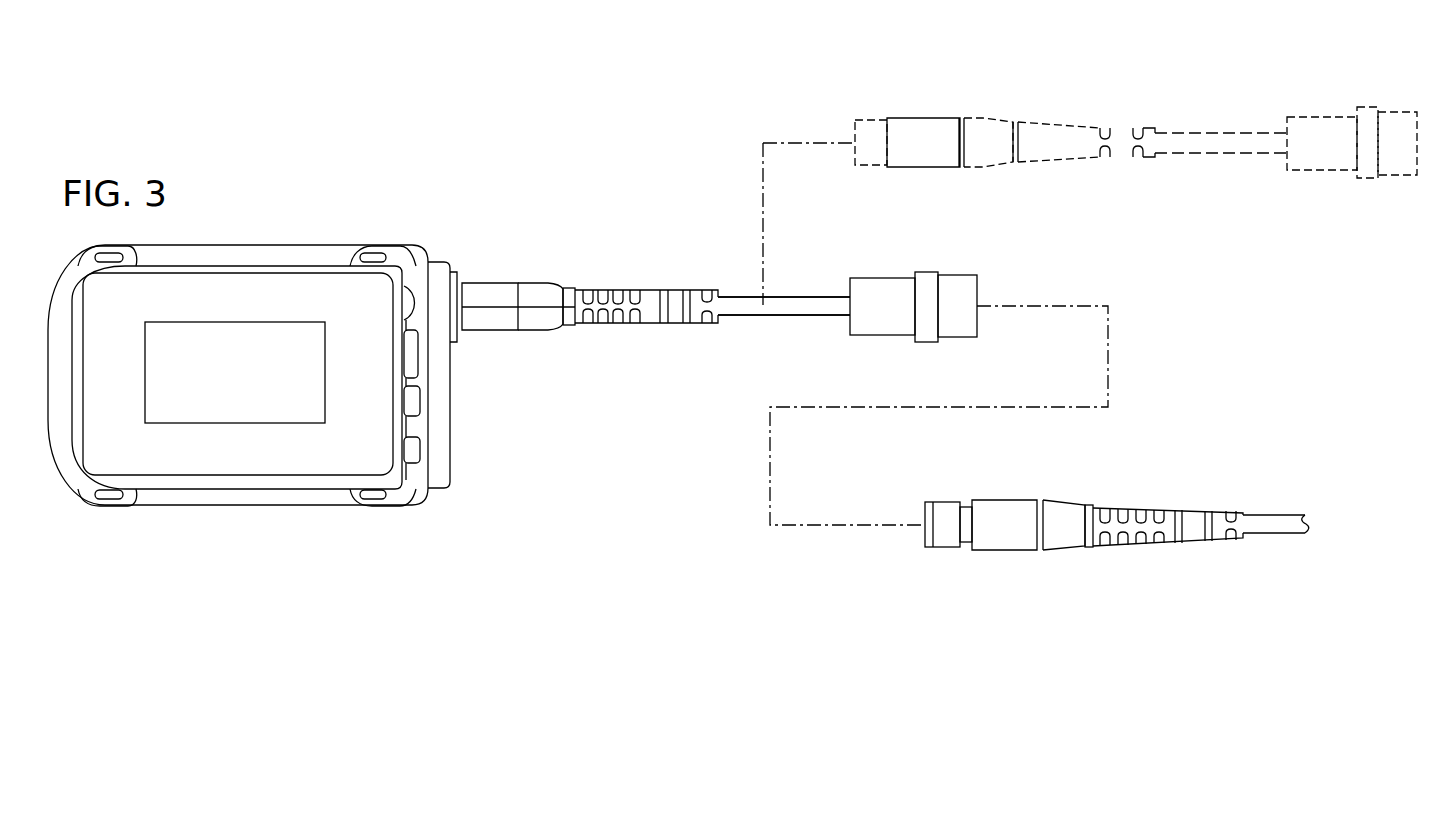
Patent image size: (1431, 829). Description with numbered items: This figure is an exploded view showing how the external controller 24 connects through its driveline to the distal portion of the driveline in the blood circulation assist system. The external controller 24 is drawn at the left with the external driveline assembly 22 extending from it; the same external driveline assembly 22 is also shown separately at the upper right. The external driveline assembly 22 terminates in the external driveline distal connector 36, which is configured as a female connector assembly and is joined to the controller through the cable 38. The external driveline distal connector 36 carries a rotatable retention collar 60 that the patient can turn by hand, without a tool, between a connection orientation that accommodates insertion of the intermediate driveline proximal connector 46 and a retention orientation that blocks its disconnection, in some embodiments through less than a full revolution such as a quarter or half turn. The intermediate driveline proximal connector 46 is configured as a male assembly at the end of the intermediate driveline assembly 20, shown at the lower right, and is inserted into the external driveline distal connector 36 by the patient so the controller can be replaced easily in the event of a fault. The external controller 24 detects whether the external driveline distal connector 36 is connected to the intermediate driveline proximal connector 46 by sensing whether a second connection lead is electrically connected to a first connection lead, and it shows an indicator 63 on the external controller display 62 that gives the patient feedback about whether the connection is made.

The intermediate driveline assembly 20 is at (1131, 493).
The external driveline assembly 22 is at (664, 244).
The external controller 24 is at (252, 348).
The external driveline distal connector 36 is at (911, 266).
The cable 38 is at (756, 318).
The intermediate driveline proximal connector 46 is at (1005, 500).
The retention collar 60 is at (966, 283).
The external controller display 62 is at (238, 374).
The indicator 63 is at (235, 372).